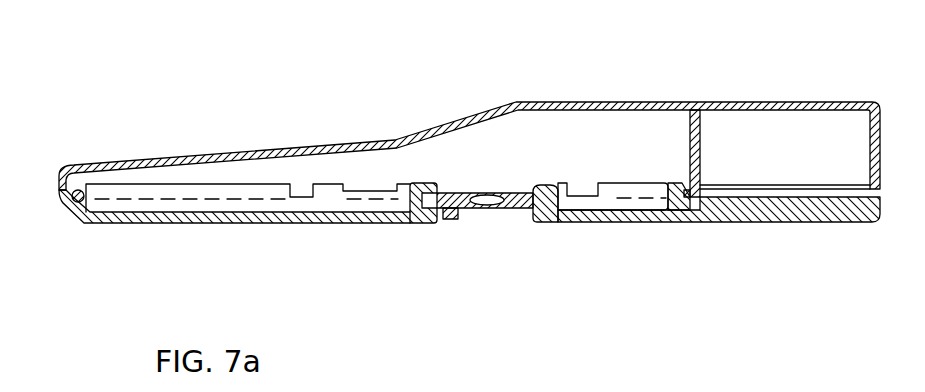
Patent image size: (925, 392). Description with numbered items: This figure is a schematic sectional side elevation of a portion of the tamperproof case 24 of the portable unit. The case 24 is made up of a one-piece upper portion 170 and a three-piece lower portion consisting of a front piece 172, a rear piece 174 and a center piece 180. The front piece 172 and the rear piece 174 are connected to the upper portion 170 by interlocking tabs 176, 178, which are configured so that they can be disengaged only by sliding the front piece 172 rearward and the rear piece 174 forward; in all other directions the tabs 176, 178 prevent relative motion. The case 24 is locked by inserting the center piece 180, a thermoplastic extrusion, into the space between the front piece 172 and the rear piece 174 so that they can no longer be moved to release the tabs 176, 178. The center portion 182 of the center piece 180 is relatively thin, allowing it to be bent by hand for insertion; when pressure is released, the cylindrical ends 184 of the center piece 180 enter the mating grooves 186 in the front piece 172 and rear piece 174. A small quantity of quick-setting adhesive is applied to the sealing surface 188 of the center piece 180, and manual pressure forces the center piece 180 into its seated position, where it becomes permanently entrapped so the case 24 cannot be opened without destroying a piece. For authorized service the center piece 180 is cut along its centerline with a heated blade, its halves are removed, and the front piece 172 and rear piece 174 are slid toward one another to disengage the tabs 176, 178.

The case 24 is at (90, 62).
The upper portion 170 is at (170, 157).
The front piece 172 is at (122, 223).
The rear piece 174 is at (798, 222).
The interlocking tab 176 is at (81, 190).
The interlocking tab 178 is at (684, 182).
The center piece 180 is at (488, 212).
The center portion 182 is at (477, 214).
The cylindrical ends 184 is at (407, 222).
The mating grooves 186 is at (552, 184).
The sealing surface 188 is at (443, 213).